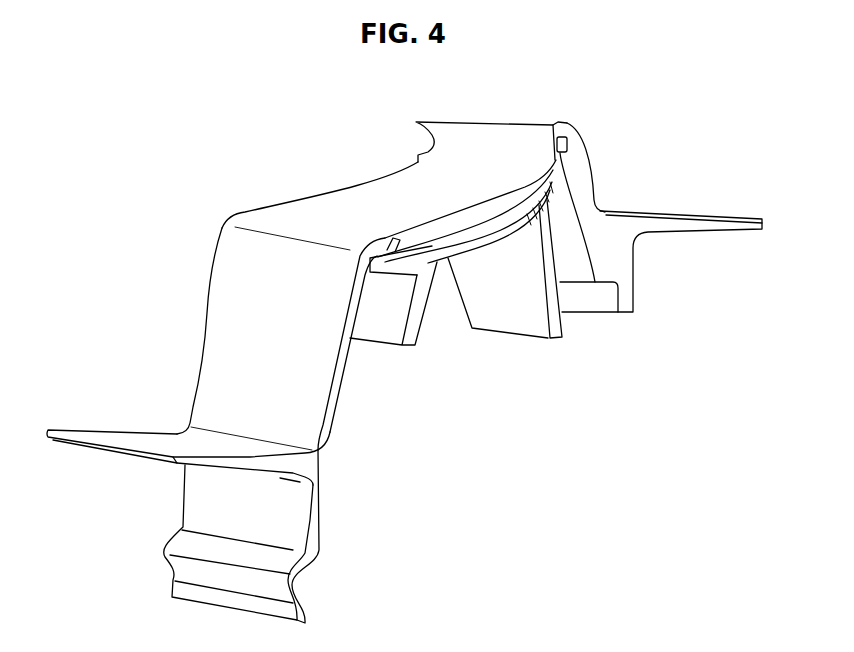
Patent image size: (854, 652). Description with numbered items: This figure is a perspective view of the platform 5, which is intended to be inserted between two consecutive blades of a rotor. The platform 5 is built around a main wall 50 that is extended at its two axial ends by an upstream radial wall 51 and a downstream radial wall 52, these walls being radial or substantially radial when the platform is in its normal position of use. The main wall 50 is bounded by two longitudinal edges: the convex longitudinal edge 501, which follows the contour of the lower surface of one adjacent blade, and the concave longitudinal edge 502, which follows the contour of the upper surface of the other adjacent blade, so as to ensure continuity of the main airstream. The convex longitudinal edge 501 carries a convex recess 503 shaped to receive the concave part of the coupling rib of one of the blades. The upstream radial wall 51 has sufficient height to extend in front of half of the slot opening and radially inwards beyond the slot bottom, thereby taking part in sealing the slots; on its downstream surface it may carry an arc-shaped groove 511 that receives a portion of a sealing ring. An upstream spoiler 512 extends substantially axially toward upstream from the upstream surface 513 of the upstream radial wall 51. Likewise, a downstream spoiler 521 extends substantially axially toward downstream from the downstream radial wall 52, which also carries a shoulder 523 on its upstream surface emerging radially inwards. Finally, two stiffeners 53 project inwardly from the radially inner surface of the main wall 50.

The platform 5 is at (540, 461).
The main wall 50 is at (401, 185).
The convex longitudinal edge 501 is at (465, 222).
The concave longitudinal edge 502 is at (317, 184).
The convex recess 503 is at (431, 258).
The upstream radial wall 51 is at (204, 311).
The groove 511 is at (320, 582).
The upstream spoiler 512 is at (167, 437).
The upstream surface 513 is at (240, 343).
The downstream radial wall 52 is at (590, 188).
The downstream spoiler 521 is at (704, 225).
The shoulder 523 is at (590, 296).
The stiffener 53 is at (380, 311).